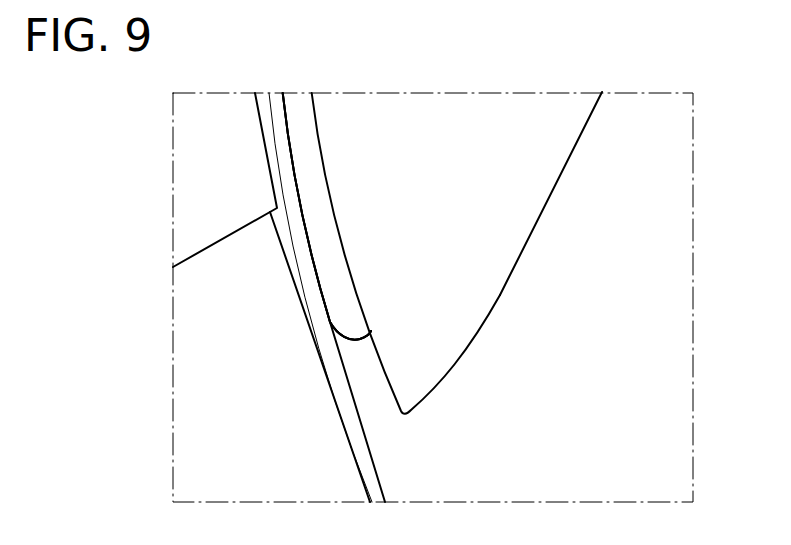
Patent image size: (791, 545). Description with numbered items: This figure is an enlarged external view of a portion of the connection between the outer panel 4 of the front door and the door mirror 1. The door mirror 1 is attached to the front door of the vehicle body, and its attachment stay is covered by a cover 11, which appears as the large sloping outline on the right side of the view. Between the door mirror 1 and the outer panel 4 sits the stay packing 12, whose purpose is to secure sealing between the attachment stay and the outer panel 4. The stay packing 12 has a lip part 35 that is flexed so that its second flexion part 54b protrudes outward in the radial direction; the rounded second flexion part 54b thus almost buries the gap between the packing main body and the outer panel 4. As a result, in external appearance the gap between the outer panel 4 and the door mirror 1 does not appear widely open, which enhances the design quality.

The door mirror 1 is at (585, 242).
The cover 11 is at (568, 167).
The outer panel 4 is at (374, 460).
The lip part 35 is at (310, 295).
The stay packing 12 is at (230, 233).
The second flexion part 54b is at (357, 342).